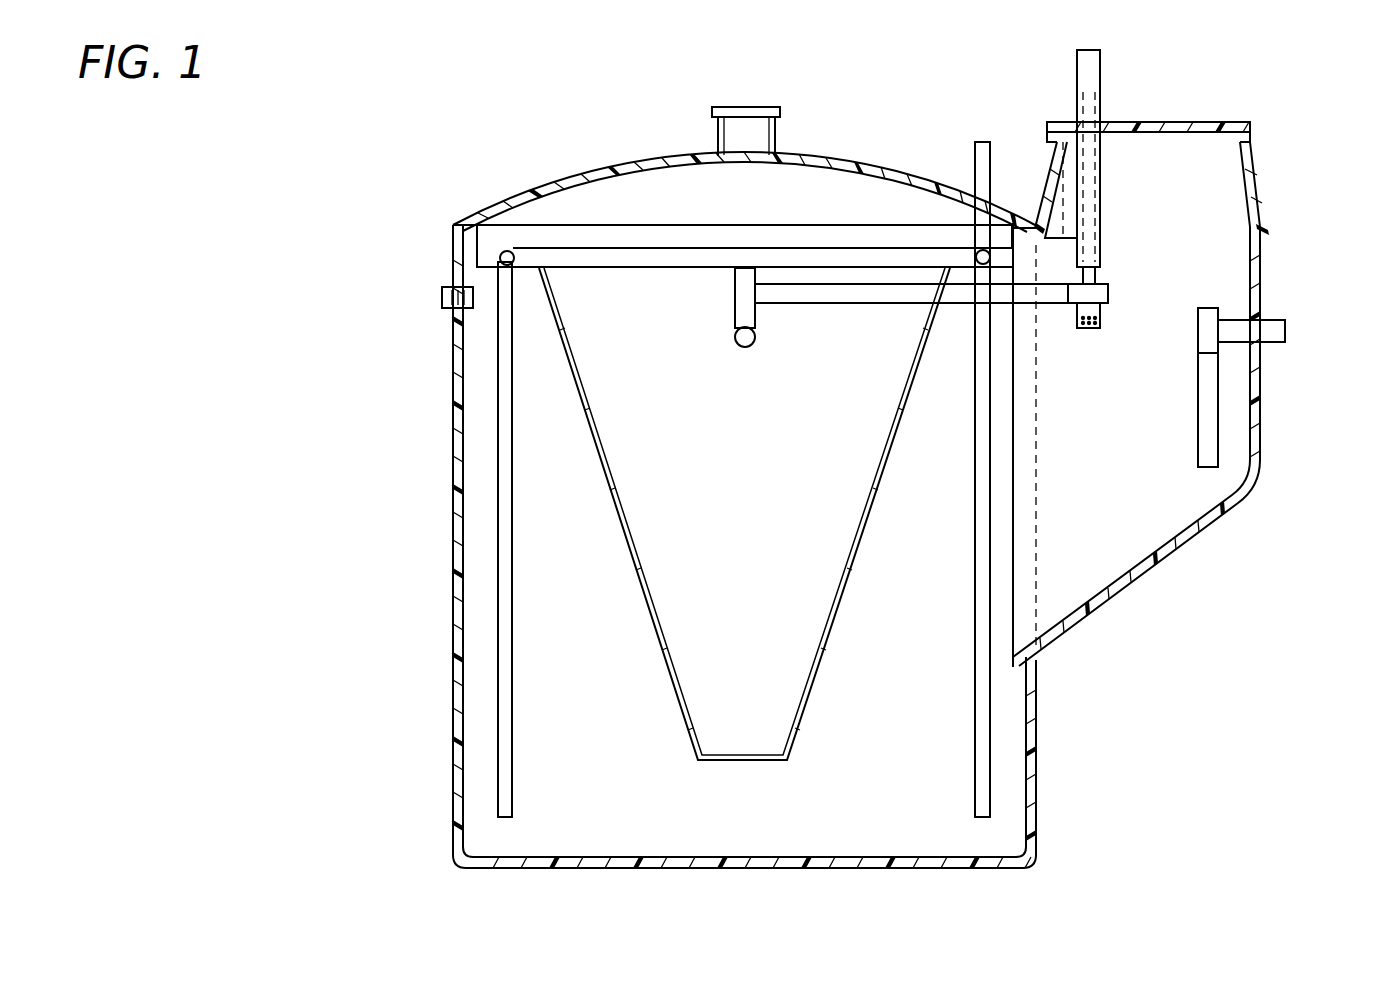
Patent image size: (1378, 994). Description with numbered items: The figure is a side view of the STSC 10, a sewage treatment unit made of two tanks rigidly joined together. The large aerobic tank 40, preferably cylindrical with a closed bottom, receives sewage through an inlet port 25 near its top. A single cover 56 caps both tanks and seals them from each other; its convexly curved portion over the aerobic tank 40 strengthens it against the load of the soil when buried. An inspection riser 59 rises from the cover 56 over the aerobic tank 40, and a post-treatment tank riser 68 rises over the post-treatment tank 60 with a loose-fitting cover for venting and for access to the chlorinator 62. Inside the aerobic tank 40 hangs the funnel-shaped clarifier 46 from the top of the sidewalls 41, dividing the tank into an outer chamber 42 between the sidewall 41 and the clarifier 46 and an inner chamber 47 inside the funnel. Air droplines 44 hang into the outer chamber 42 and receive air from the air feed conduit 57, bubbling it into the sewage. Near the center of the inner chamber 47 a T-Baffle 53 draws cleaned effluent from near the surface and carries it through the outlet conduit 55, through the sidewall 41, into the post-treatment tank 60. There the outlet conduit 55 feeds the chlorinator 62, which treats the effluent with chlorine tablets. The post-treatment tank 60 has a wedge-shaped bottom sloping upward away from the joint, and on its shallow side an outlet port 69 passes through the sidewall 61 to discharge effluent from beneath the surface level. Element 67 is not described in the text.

The STSC 10 is at (417, 133).
The inlet port 25 is at (446, 288).
The aerobic tank 40 is at (726, 546).
The sidewalls 41 is at (452, 348).
The outer chamber 42 is at (644, 516).
The air droplines 44 is at (502, 612).
The clarifier 46 is at (690, 742).
The inner chamber 47 is at (638, 340).
The T-Baffle 53 is at (747, 271).
The outlet conduit 55 is at (832, 291).
The cover 56 is at (643, 165).
The air feed conduit 57 is at (903, 256).
The inspection riser 59 is at (718, 107).
The post-treatment tank 60 is at (1165, 346).
The sidewall 61 is at (1259, 425).
The chlorinator 62 is at (1088, 76).
The top flange 67 is at (1157, 128).
The post-treatment tank riser 68 is at (1256, 190).
The outlet port 69 is at (1284, 330).